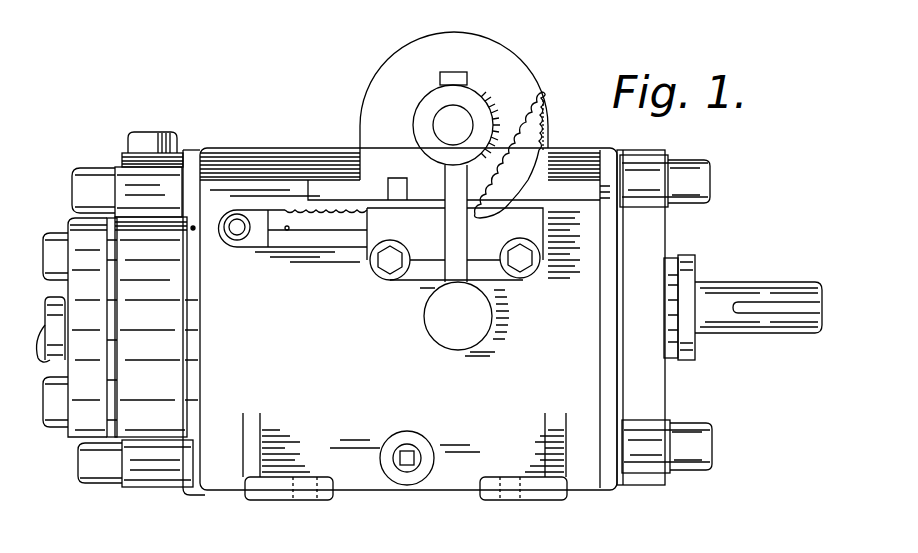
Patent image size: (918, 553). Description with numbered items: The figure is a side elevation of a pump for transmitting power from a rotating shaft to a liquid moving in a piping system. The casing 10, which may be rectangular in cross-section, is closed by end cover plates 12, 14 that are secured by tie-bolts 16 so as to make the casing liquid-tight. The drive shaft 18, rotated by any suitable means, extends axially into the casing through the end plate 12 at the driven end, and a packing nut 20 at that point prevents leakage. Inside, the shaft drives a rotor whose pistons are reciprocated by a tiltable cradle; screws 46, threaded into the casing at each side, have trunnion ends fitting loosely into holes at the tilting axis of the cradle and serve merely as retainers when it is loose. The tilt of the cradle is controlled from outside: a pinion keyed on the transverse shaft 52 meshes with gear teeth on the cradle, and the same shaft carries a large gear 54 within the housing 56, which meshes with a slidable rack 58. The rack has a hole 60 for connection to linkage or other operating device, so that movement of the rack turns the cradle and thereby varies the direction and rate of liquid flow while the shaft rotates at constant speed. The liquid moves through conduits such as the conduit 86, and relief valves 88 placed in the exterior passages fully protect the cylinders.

The casing 10 is at (408, 324).
The end cover plate 12 is at (615, 402).
The end cover plate 14 is at (197, 457).
The tie-bolts 16 is at (703, 176).
The drive shaft 18 is at (738, 284).
The packing nut 20 is at (690, 272).
The screws 46 is at (464, 260).
The shaft 52 is at (456, 118).
The large gear 54 is at (533, 135).
The housing 56 is at (524, 63).
The rack 58 is at (302, 233).
The hole 60 is at (237, 240).
The conduit 86 is at (50, 362).
The relief valves 88 is at (128, 152).